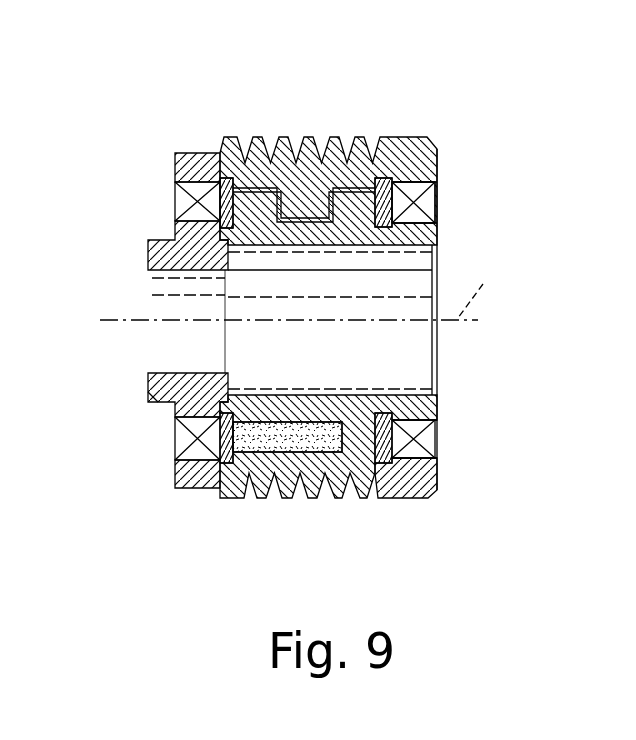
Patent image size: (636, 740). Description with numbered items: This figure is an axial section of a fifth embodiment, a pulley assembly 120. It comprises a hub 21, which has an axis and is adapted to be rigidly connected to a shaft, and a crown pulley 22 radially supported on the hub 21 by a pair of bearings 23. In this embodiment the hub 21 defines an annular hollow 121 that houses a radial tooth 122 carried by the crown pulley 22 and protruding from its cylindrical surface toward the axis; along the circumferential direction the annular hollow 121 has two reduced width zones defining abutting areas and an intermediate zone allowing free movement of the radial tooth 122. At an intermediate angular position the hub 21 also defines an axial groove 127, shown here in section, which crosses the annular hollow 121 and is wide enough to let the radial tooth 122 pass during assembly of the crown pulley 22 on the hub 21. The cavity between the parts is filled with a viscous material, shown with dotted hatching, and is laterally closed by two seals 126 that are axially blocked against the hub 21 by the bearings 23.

The pulley assembly 120 is at (440, 120).
The crown pulley 22 is at (213, 152).
The hub 21 is at (167, 250).
The bearings 23 is at (175, 203).
The radial tooth 122 is at (316, 200).
The annular hollow 121 is at (347, 418).
The seals 126 is at (222, 425).
The axial groove 127 is at (245, 452).